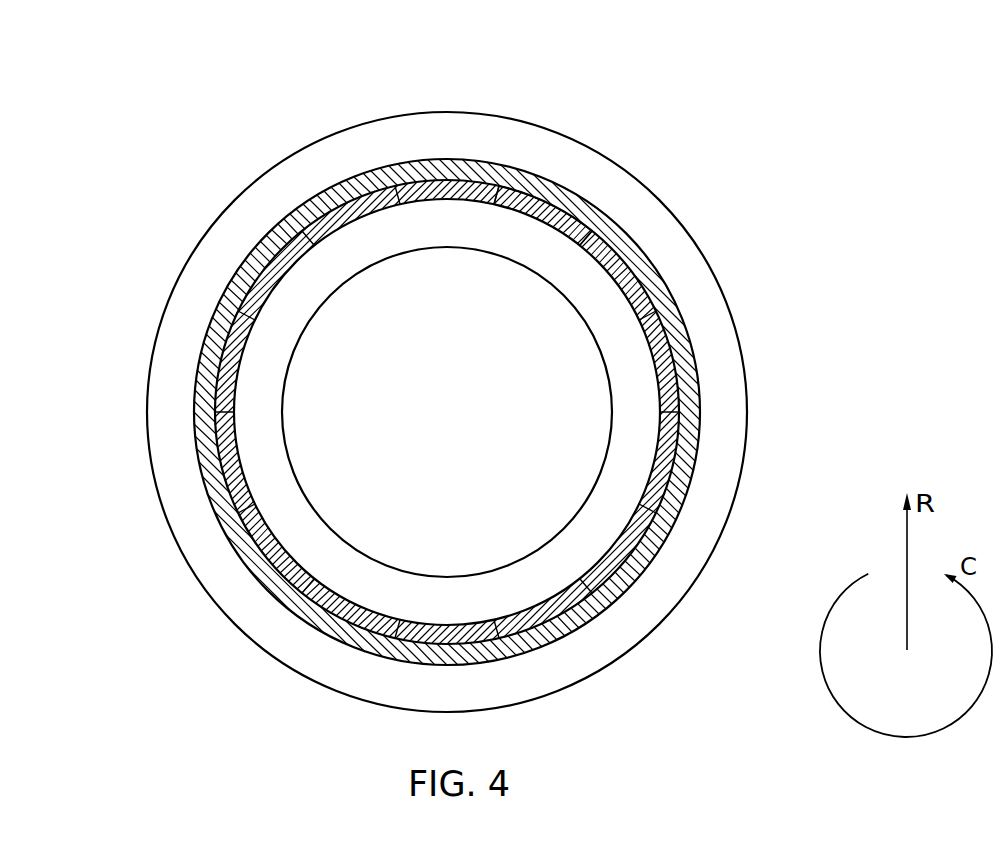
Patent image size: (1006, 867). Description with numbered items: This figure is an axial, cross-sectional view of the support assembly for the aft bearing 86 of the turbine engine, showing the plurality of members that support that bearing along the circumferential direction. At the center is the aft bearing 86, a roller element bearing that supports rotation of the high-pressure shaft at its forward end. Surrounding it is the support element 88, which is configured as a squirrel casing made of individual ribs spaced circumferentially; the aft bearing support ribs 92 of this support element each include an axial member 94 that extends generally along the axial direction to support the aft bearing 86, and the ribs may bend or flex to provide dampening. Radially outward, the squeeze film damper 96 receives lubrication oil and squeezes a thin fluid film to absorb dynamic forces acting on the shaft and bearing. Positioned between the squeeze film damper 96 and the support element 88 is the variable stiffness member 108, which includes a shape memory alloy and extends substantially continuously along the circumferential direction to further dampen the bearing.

The aft bearing 86 is at (622, 394).
The support element 88 is at (447, 379).
The aft bearing support ribs 92 is at (575, 195).
The axial member 94 is at (556, 215).
The squeeze film damper 96 is at (725, 310).
The variable stiffness member 108 is at (447, 367).